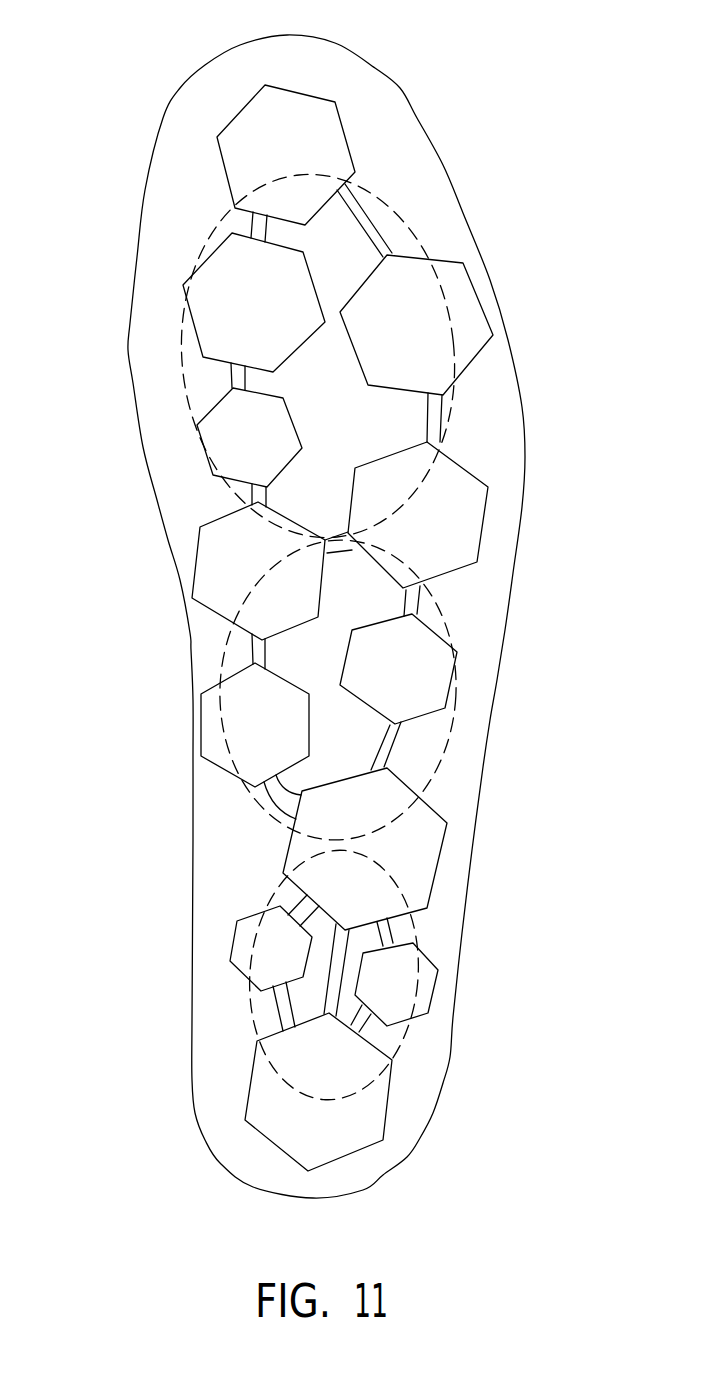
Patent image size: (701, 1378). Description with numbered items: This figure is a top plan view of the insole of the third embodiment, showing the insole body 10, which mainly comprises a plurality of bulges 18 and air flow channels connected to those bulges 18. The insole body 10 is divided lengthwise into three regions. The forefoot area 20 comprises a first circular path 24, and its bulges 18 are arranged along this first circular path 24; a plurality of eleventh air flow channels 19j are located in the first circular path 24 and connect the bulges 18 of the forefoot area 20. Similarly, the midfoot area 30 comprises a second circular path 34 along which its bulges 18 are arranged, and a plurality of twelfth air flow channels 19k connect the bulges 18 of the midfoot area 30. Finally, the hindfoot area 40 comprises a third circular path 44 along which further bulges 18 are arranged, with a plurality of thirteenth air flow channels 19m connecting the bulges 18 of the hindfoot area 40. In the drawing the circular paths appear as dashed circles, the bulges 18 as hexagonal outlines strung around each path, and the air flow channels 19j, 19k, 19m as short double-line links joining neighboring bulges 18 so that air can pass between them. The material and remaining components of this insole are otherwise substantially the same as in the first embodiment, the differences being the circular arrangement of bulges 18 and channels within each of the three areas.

The insole body 10 is at (527, 115).
The bulges 18 is at (242, 128).
The eleventh air flow channels 19j is at (380, 220).
The twelfth air flow channels 19k is at (418, 608).
The thirteenth air flow channels 19m is at (393, 932).
The forefoot area 20 is at (333, 309).
The first circular path 24 is at (213, 227).
The midfoot area 30 is at (347, 644).
The second circular path 34 is at (228, 647).
The hindfoot area 40 is at (332, 969).
The third circular path 44 is at (280, 900).